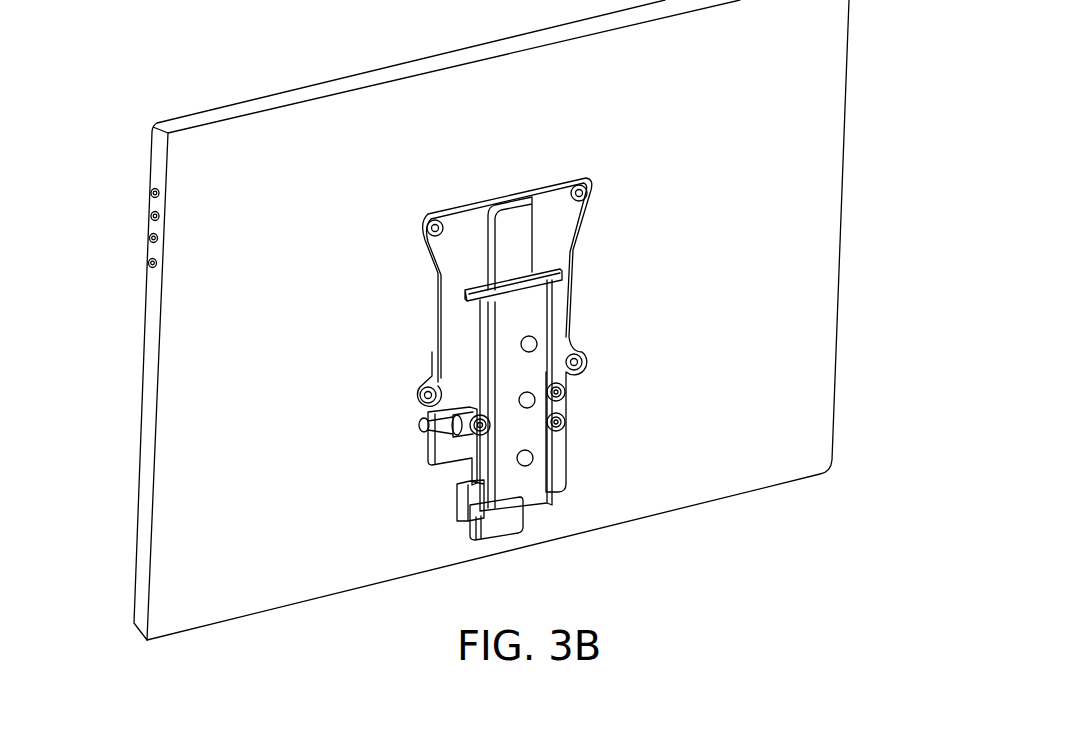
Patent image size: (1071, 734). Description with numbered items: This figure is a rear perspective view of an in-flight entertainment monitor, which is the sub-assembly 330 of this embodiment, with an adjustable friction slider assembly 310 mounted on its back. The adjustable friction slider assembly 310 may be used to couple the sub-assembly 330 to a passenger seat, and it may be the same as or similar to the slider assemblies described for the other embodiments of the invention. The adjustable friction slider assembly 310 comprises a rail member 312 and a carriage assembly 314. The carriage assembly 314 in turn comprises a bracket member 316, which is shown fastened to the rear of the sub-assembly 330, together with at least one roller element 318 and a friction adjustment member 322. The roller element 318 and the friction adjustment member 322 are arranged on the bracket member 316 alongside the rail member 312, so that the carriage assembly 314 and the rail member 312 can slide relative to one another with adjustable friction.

The adjustable friction slider assembly 310 is at (604, 293).
The rail member 312 is at (520, 482).
The carriage assembly 314 is at (404, 216).
The bracket member 316 is at (465, 230).
The roller element 318 is at (565, 393).
The friction adjustment member 322 is at (419, 426).
The sub-assembly 330 is at (180, 443).